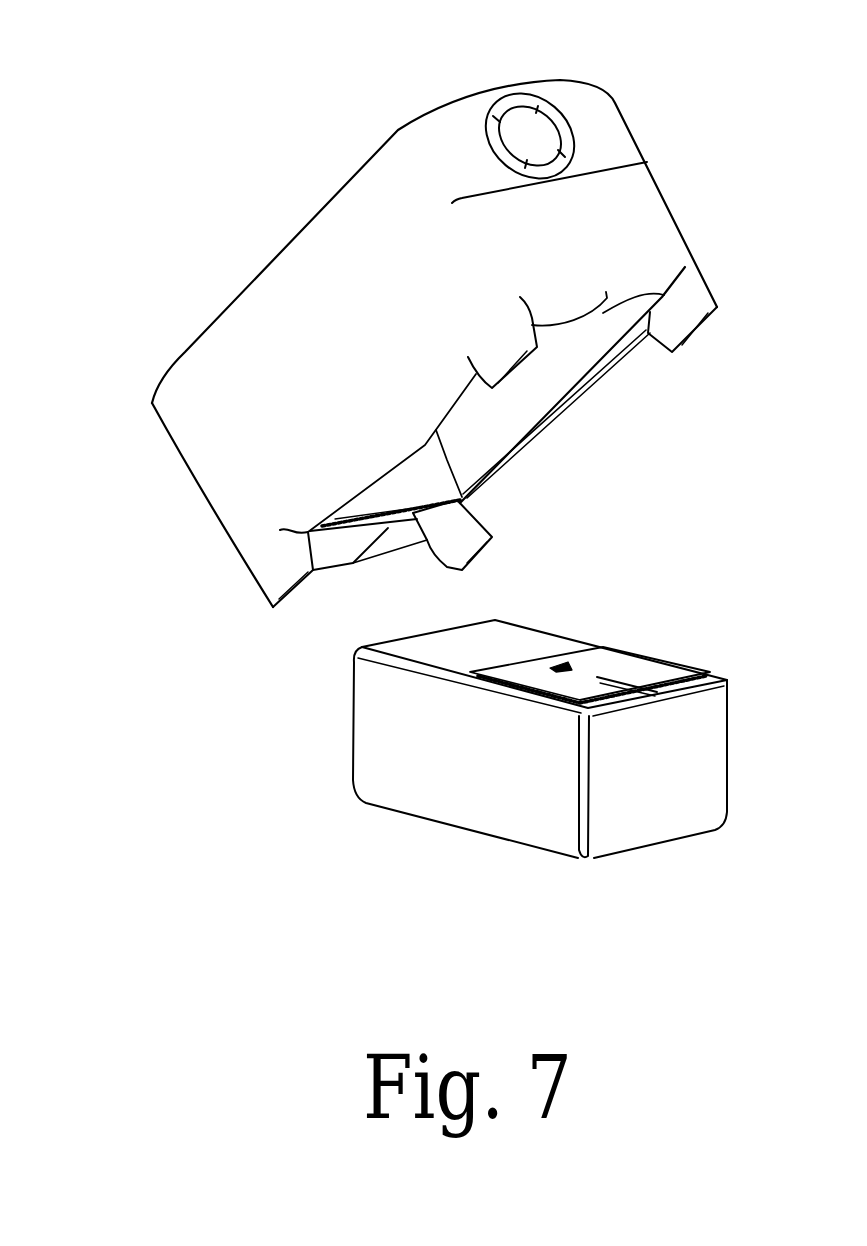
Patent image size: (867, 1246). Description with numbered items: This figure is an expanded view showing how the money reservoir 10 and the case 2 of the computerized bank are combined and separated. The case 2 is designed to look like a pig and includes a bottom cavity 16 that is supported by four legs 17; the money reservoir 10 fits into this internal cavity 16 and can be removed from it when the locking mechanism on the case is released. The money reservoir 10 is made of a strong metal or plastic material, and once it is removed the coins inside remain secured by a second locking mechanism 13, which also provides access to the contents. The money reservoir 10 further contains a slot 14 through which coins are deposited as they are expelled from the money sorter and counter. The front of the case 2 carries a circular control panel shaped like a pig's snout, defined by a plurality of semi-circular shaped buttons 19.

The case 2 is at (150, 407).
The semi-circular shaped buttons 19 is at (557, 121).
The bottom cavity 16 is at (500, 427).
The legs 17 is at (497, 322).
The money reservoir 10 is at (428, 783).
The second locking mechanism 13 is at (587, 650).
The slot 14 is at (637, 663).